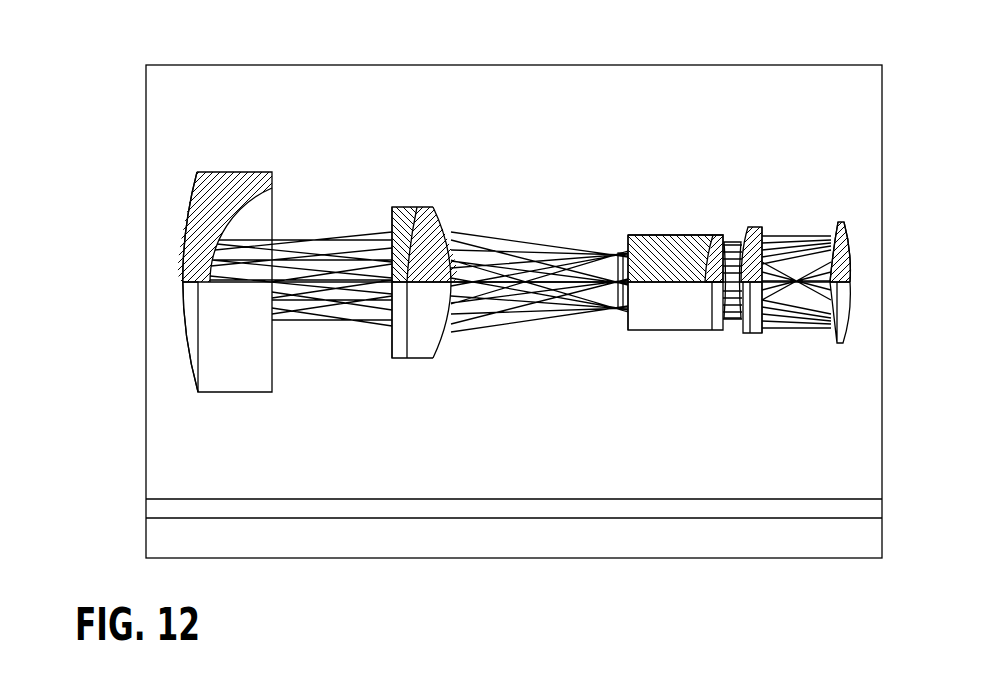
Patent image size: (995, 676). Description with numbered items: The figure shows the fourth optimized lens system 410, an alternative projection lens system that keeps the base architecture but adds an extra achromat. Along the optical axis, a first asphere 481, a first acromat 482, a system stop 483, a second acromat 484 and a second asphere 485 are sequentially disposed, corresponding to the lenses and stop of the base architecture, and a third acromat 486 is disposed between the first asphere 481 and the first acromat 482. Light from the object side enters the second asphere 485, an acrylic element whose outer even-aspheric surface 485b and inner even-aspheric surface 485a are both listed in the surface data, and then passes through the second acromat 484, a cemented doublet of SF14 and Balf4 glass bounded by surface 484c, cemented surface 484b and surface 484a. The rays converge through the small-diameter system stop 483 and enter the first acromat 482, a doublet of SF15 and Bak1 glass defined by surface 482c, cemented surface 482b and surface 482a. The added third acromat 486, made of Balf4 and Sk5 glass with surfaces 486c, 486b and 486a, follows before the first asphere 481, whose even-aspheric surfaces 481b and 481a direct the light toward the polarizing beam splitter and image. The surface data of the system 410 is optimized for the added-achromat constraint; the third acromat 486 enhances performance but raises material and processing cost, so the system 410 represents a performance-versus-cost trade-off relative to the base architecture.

The fourth optimized lens system 410 is at (823, 108).
The first asphere 481 is at (830, 290).
The surface of the first asphere 481a is at (851, 223).
The surface of the first asphere 481b is at (829, 228).
The first acromat 482 is at (628, 285).
The surface of the first acromat 482a is at (703, 258).
The surface of the first acromat 482b is at (649, 236).
The surface of the first acromat 482c is at (616, 245).
The system stop 483 is at (617, 311).
The second acromat 484 is at (411, 291).
The surface of the second acromat 484a is at (442, 212).
The surface of the second acromat 484b is at (416, 207).
The surface of the second acromat 484c is at (391, 224).
The second asphere 485 is at (248, 301).
The surface of the second asphere 485a is at (258, 214).
The surface of the second asphere 485b is at (191, 204).
The third acromat 486 is at (729, 279).
The surface of the third acromat 486a is at (722, 246).
The surface of the third acromat 486b is at (739, 228).
The surface of the third acromat 486c is at (764, 227).